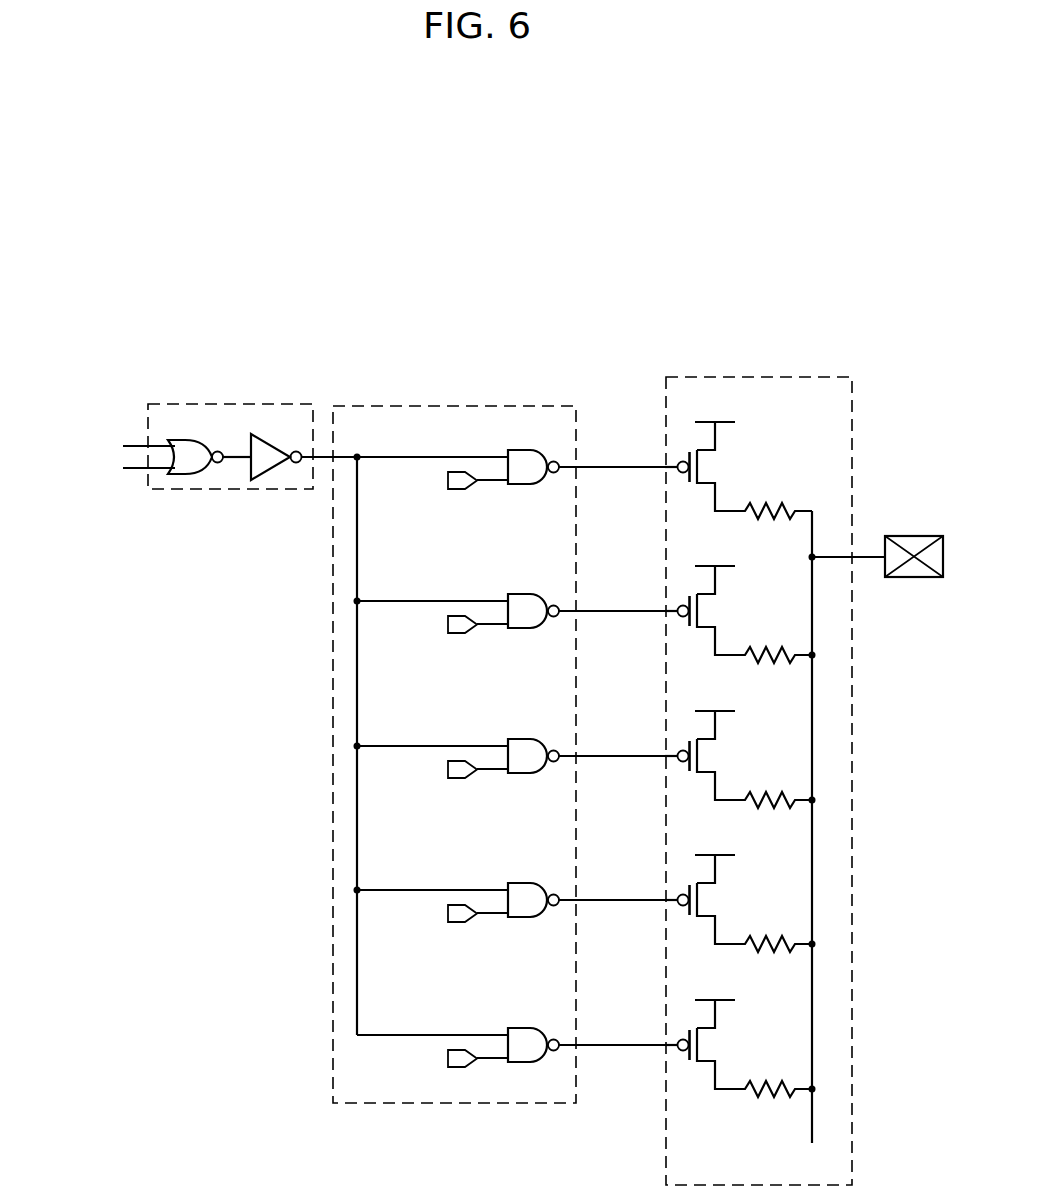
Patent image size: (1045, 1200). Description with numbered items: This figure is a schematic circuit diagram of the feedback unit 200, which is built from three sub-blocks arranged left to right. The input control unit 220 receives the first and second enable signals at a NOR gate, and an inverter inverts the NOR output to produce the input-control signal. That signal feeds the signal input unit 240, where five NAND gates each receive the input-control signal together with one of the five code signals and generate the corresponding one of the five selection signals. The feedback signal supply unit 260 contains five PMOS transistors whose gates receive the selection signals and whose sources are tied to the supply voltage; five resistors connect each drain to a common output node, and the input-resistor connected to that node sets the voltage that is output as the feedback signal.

The feedback unit 200 is at (634, 329).
The input control unit 220 is at (268, 404).
The signal input unit 240 is at (529, 406).
The feedback signal supply unit 260 is at (808, 377).